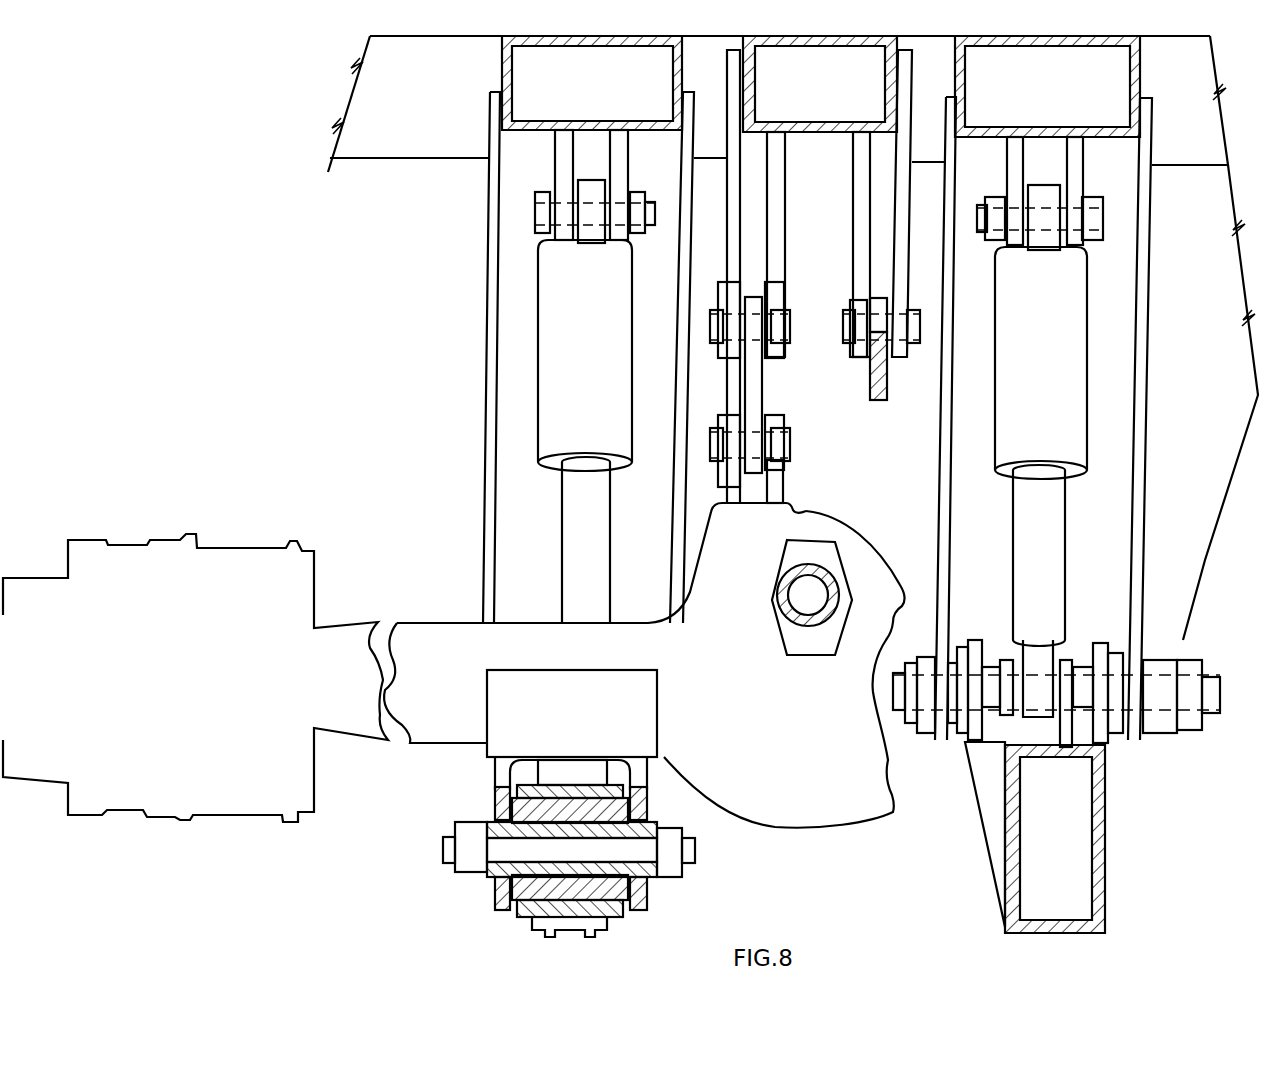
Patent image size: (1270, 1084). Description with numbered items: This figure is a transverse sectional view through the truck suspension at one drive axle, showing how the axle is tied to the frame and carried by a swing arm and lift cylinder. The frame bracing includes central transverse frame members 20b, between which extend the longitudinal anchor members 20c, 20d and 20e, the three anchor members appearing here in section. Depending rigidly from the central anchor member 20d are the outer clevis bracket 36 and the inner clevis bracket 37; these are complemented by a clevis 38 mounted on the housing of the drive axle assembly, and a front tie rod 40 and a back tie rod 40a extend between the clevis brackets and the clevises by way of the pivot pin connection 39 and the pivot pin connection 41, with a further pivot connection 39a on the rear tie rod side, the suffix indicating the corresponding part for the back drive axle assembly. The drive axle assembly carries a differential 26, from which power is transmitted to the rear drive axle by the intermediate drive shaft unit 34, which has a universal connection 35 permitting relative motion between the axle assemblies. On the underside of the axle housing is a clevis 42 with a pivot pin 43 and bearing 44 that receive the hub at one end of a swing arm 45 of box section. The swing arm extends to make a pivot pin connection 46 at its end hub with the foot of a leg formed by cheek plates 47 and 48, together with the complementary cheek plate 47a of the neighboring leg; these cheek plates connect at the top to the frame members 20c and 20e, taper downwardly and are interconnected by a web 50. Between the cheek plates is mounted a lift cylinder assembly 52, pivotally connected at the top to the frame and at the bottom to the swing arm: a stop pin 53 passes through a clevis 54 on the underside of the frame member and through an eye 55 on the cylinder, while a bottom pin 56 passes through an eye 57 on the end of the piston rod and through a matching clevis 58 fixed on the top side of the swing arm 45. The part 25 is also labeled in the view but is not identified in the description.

The central transverse frame member 20b is at (410, 158).
The longitudinal anchor member 20c is at (497, 100).
The central anchor member 20d is at (748, 102).
The longitudinal anchor member 20e is at (963, 101).
The arm 25 is at (438, 632).
The differential 26 is at (838, 815).
The intermediate drive shaft unit 34 is at (762, 588).
The universal connection 35 is at (795, 635).
The outer clevis bracket 36 is at (773, 193).
The inner clevis bracket 37 is at (853, 210).
The clevis 38 is at (773, 479).
The pivot pin connection 39 is at (826, 298).
The pivot bolt 39a is at (920, 330).
The front tie rod 40 is at (752, 378).
The back tie rod 40a is at (878, 400).
The pivot pin connection 41 is at (783, 445).
The clevis 42 is at (497, 776).
The pivot pin 43 is at (450, 846).
The bearing 44 is at (638, 804).
The swing arm 45 is at (1098, 858).
The pivot pin connection 46 is at (1215, 705).
The cheek plate 47 is at (487, 503).
The cheek plate 47a is at (946, 500).
The cheek plate 48 is at (679, 500).
The web 50 is at (512, 286).
The lift cylinder assembly 52 is at (525, 351).
The stop pin 53 is at (545, 192).
The clevis 54 is at (613, 160).
The eye 55 is at (600, 232).
The bottom pin 56 is at (1083, 688).
The eye 57 is at (1040, 665).
The clevis 58 is at (1005, 738).